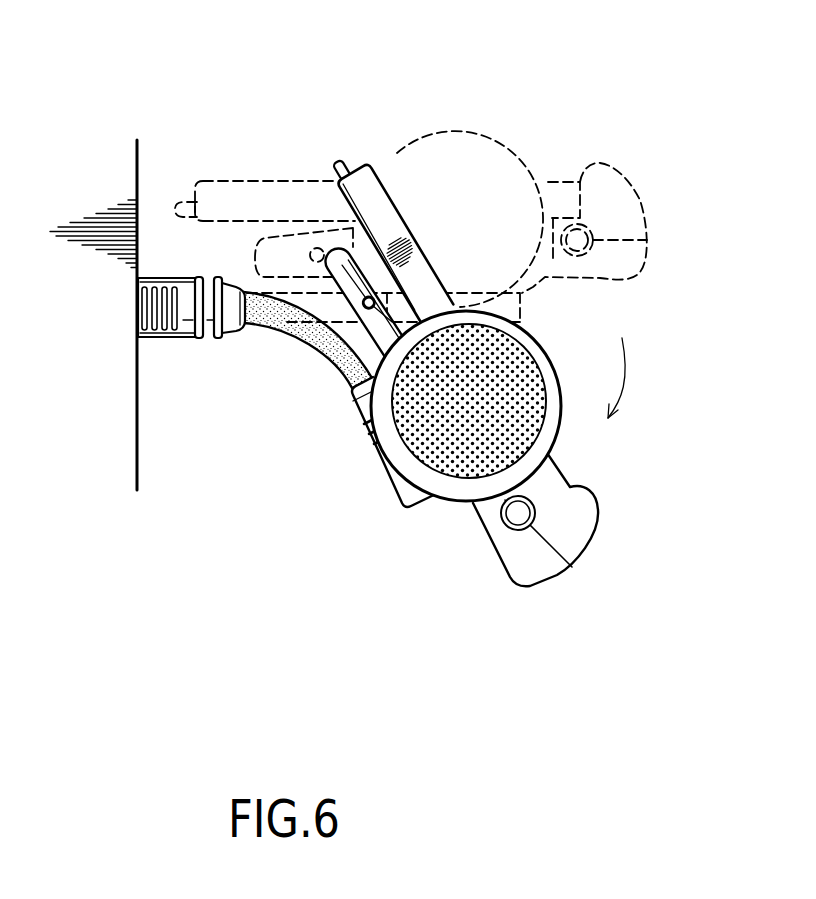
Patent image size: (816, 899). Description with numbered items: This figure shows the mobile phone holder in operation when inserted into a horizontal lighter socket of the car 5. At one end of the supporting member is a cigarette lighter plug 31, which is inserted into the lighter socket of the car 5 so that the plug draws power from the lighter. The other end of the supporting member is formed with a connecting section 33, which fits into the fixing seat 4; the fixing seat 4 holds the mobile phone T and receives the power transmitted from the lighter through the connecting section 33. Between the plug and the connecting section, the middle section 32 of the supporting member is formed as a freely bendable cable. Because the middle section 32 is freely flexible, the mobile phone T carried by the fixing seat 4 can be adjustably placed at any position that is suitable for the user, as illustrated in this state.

The mobile phone T is at (383, 203).
The fixing seat 4 is at (532, 577).
The car 5 is at (131, 390).
The cigarette lighter plug 31 is at (182, 338).
The middle section 32 is at (307, 340).
The connecting section 33 is at (393, 481).